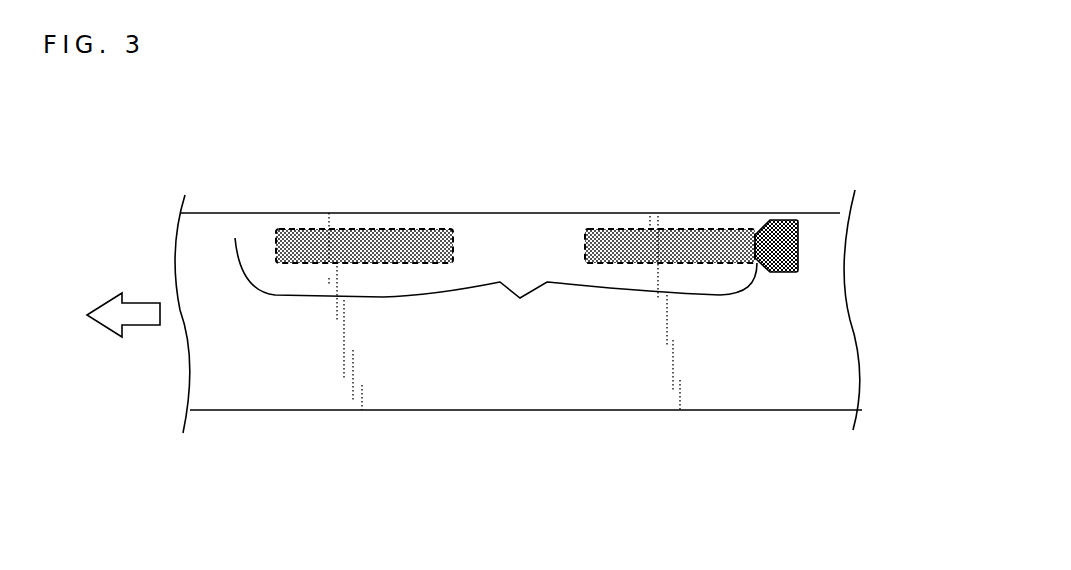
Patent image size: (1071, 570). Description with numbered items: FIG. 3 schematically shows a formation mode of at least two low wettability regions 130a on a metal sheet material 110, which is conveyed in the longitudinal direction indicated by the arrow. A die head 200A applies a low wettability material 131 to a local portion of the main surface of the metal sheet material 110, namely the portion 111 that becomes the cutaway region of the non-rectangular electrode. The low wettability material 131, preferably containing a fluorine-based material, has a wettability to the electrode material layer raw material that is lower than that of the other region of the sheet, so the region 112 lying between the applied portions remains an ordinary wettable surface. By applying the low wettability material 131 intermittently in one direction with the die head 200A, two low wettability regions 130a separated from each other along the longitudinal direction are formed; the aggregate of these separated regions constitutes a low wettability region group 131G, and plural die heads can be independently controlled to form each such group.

The metal sheet material 110 is at (838, 343).
The portion that becomes the cutaway region of the non-rectangular electrode 111 is at (632, 228).
The board surface region 112 is at (517, 243).
The low wettability material 131 is at (567, 199).
The low wettability region 130a is at (357, 232).
The ground pad group 131G is at (388, 297).
The die head 200A is at (790, 240).